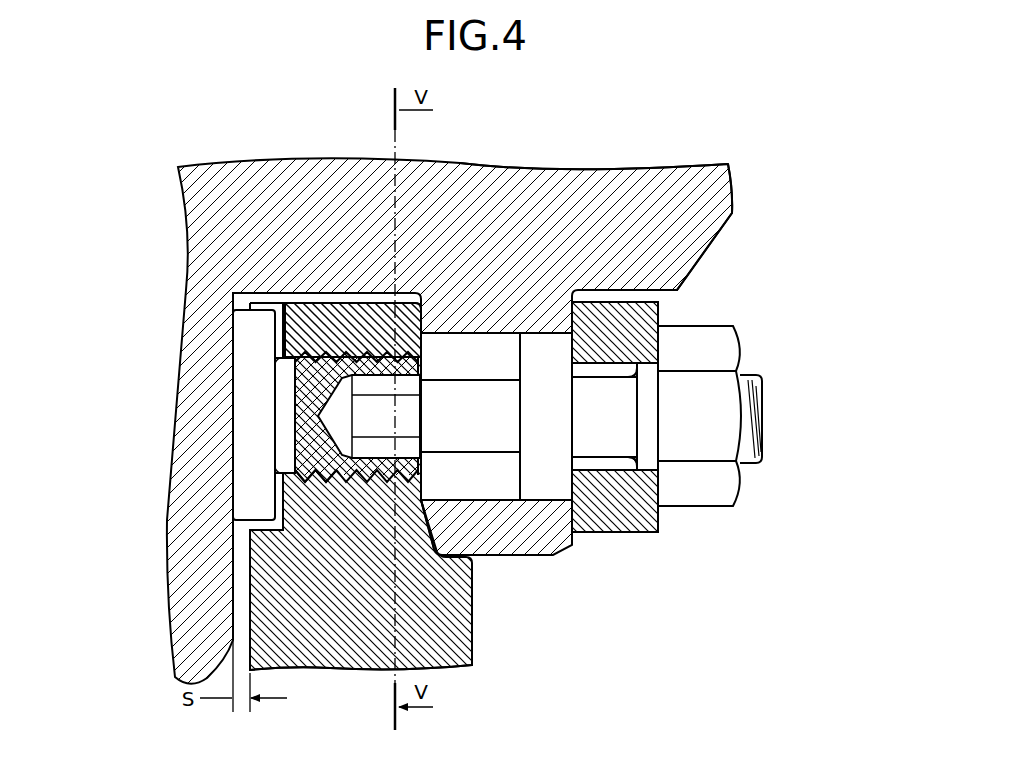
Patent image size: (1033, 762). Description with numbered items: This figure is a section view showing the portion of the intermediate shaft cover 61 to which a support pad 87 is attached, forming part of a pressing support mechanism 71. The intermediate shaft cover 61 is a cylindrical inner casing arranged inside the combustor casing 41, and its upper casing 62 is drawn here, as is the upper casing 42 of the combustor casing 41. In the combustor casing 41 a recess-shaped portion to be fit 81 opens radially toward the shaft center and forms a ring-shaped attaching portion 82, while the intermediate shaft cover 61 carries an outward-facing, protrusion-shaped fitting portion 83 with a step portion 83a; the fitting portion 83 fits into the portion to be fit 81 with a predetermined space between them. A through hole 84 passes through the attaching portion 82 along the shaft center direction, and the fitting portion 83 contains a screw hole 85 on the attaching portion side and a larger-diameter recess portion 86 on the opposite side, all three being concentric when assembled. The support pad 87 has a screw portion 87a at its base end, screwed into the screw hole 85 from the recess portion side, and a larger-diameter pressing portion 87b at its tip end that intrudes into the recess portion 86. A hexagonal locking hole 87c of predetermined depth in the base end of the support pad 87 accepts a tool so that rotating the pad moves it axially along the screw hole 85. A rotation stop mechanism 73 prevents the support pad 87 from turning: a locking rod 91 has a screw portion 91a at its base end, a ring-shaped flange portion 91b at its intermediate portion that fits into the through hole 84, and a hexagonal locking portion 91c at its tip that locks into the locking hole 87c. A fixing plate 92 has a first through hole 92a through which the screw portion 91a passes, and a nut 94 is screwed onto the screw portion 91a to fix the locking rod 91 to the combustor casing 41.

The combustor casing 41 is at (737, 181).
The upper casing 42 is at (703, 188).
The intermediate shaft cover 61 is at (477, 640).
The upper casing 62 is at (362, 661).
The pressing support mechanism 71 is at (270, 252).
The rotation stop mechanism 73 is at (623, 365).
The portion to be fit 81 is at (285, 294).
The attaching portion 82 is at (545, 550).
The fitting portion 83 is at (355, 320).
The step portion 83a is at (452, 548).
The through hole 84 is at (498, 376).
The screw hole 85 is at (312, 470).
The recess portion 86 is at (283, 503).
The support pad 87 is at (282, 420).
The screw portion 87a is at (317, 355).
The pressing portion 87b is at (253, 446).
The locking hole 87c is at (385, 390).
The locking rod 91 is at (597, 331).
The screw portion 91a is at (754, 400).
The flange portion 91b is at (545, 353).
The locking portion 91c is at (405, 413).
The fixing plate 92 is at (614, 540).
The first through hole 92a is at (610, 467).
The nut 94 is at (741, 332).